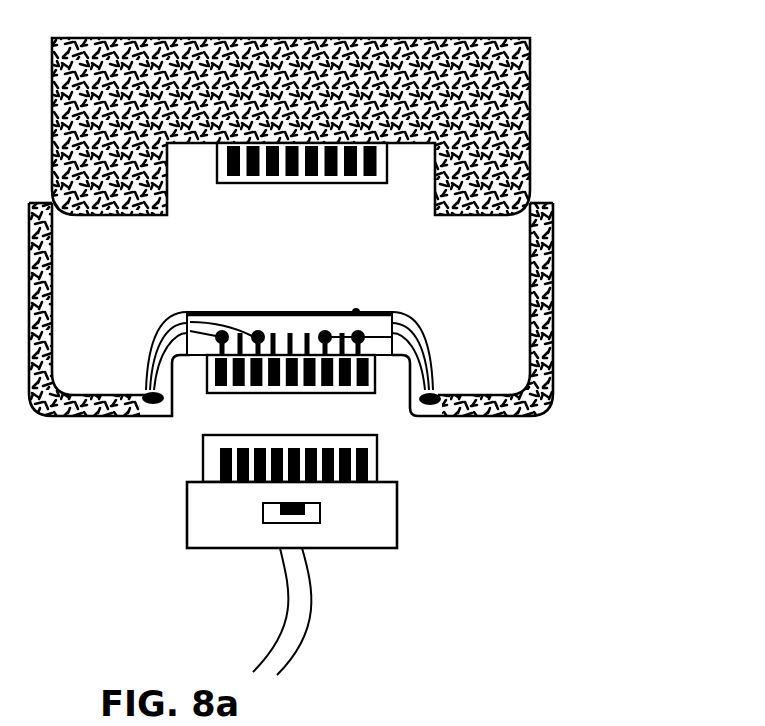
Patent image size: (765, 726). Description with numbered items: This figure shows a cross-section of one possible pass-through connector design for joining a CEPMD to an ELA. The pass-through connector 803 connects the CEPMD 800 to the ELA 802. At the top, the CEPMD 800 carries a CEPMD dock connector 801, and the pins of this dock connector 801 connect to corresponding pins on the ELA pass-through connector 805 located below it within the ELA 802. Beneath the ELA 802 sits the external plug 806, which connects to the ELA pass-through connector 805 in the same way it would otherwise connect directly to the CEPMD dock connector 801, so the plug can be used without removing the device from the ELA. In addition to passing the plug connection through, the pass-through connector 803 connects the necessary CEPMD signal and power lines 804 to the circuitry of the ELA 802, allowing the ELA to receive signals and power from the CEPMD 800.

The CEPMD 800 is at (530, 110).
The CEPMD dock connector 801 is at (295, 186).
The ELA 802 is at (554, 262).
The pass-through connector 803 is at (259, 306).
The CEPMD signal and power lines 804 is at (356, 310).
The ELA pass-through connector 805 is at (323, 396).
The external plug 806 is at (360, 556).